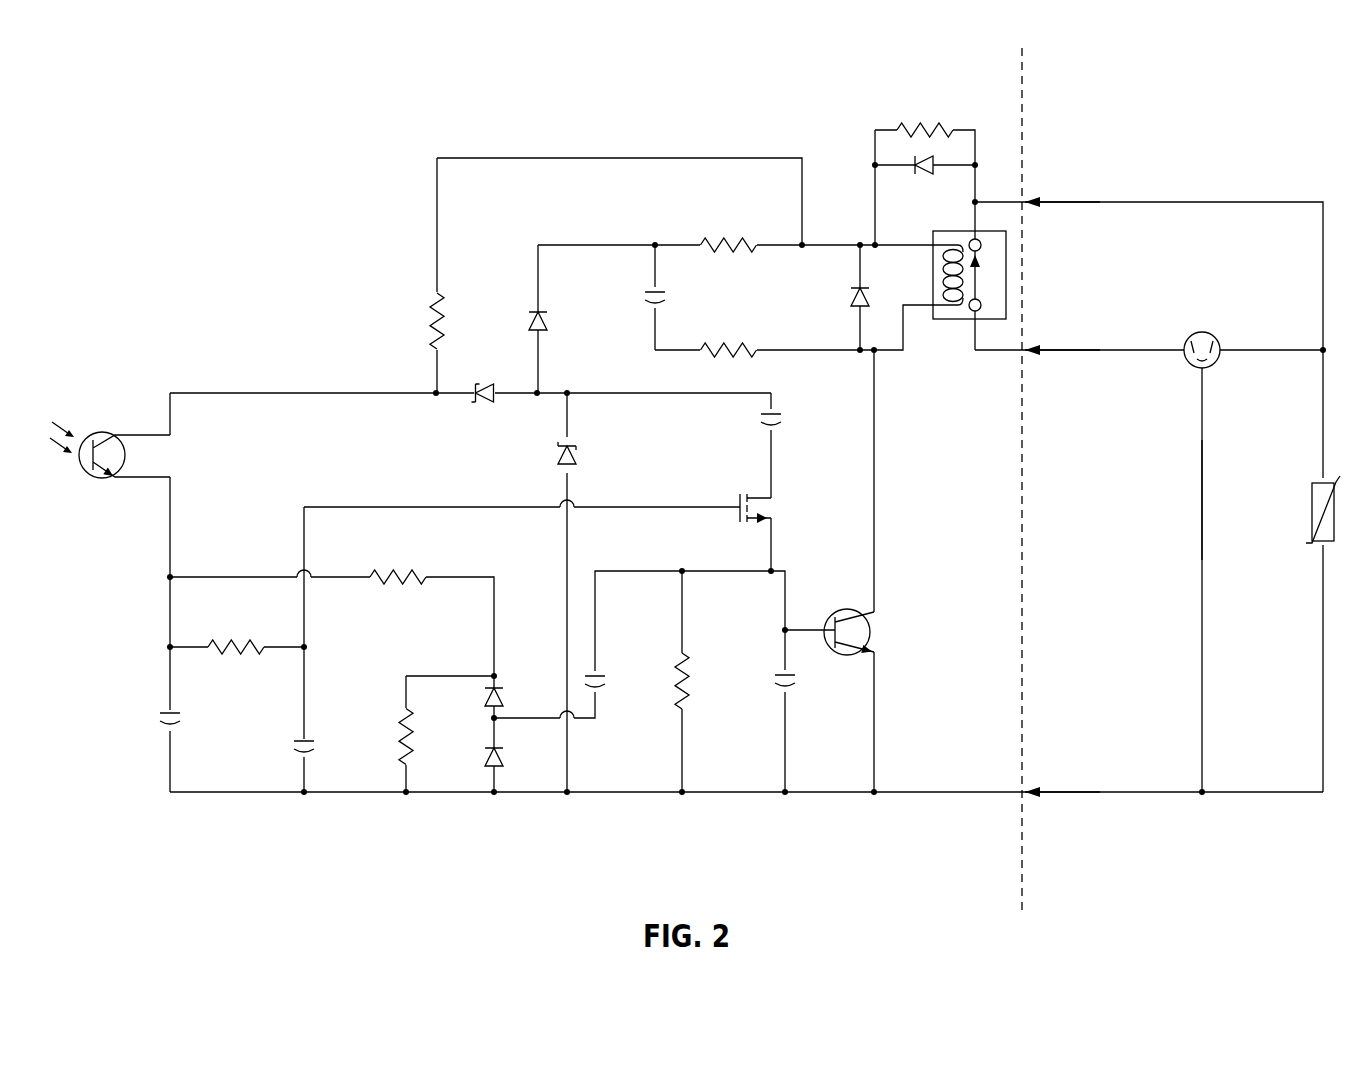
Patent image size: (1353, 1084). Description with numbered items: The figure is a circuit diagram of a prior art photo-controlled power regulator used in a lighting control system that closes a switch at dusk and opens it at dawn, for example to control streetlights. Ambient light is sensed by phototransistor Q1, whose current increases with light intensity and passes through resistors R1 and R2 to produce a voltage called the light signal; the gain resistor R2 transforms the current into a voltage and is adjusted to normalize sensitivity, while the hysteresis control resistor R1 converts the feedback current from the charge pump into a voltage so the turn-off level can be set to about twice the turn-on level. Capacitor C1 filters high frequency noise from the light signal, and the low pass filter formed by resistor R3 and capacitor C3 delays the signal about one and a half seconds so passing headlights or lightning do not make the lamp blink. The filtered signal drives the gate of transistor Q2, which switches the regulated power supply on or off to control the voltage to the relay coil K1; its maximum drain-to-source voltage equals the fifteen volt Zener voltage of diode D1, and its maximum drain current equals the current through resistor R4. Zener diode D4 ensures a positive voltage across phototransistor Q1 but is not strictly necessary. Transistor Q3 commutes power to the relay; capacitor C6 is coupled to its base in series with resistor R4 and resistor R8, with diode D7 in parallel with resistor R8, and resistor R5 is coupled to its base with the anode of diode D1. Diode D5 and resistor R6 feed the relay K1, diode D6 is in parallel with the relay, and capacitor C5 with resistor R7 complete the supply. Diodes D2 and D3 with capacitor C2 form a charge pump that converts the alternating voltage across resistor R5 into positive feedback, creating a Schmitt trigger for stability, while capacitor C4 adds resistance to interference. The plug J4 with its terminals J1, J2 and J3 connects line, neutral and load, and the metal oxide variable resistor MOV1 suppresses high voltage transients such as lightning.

The phototransistor Q1 is at (110, 450).
The resistor R3 is at (237, 617).
The capacitor C1 is at (208, 733).
The capacitor C3 is at (332, 720).
The gain resistor R2 is at (398, 550).
The hysteresis control resistor R1 is at (434, 737).
The diode D3 is at (512, 697).
The diode D2 is at (512, 755).
The Zener diode D1 is at (595, 460).
The capacitor C2 is at (625, 654).
The third resistor R5 is at (713, 681).
The capacitor C4 is at (823, 692).
The transistor Q2 is at (804, 509).
The transistor Q3 is at (883, 633).
The first capacitor C6 is at (807, 424).
The Zener diode D4 is at (484, 366).
The first resistor R4 is at (400, 321).
The second diode D5 is at (522, 308).
The second capacitor C5 is at (616, 301).
The fourth resistor R6 is at (729, 215).
The fifth resistor R7 is at (729, 322).
The third diode D6 is at (876, 285).
The first diode D7 is at (923, 194).
The second resistor R8 is at (926, 100).
The relay K1 is at (1040, 275).
The connector J1 is at (1062, 192).
The connector J2 (load/line) J2 is at (1168, 364).
The connector J3 is at (1062, 783).
The plug J4 is at (1175, 500).
The metal oxide variable resistor MOV1 is at (1297, 498).